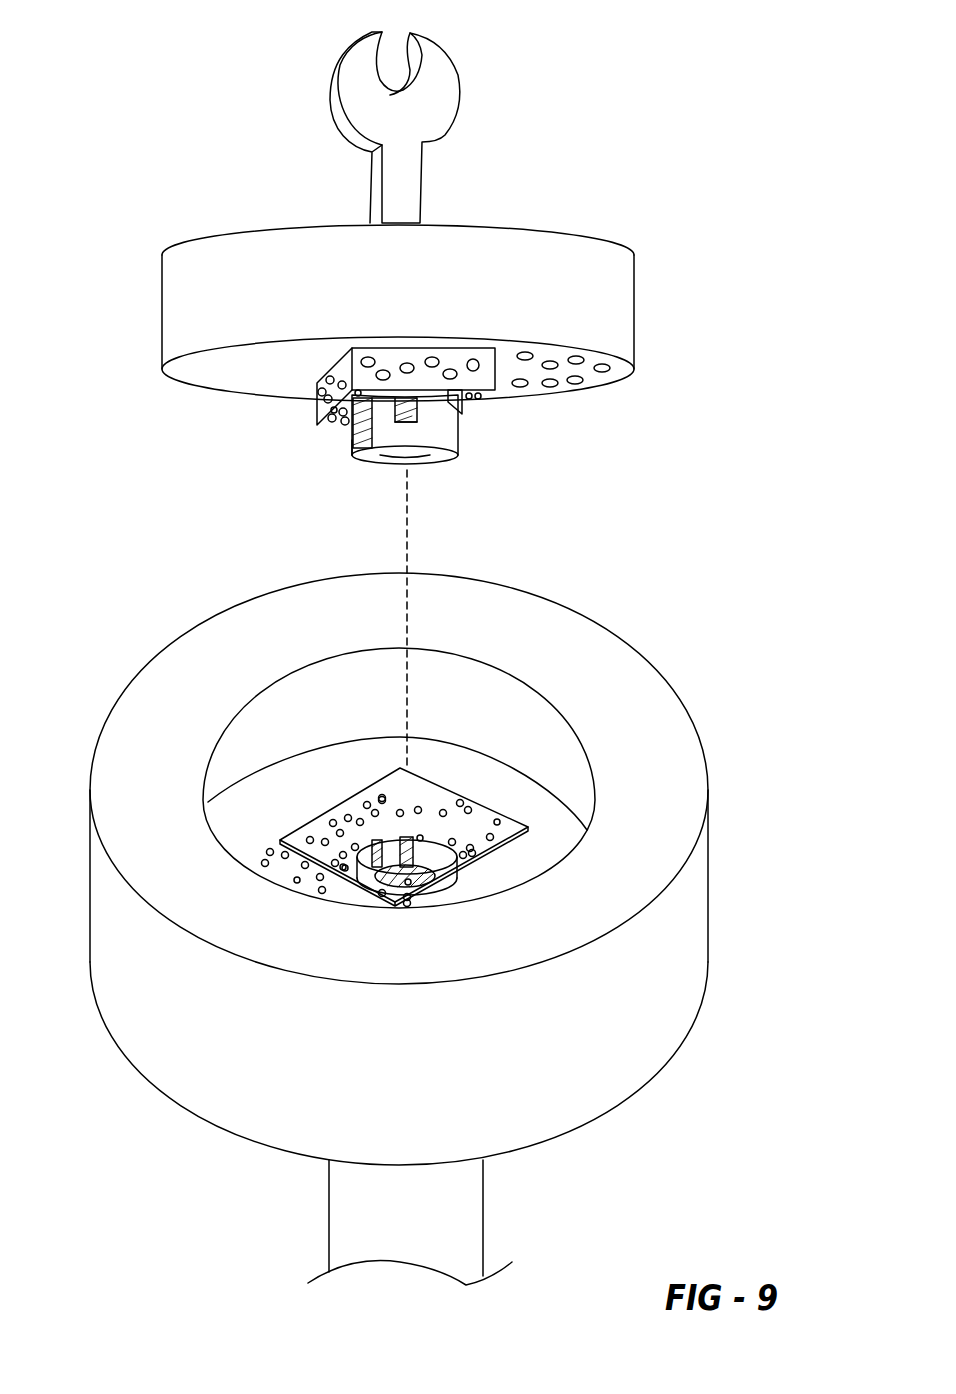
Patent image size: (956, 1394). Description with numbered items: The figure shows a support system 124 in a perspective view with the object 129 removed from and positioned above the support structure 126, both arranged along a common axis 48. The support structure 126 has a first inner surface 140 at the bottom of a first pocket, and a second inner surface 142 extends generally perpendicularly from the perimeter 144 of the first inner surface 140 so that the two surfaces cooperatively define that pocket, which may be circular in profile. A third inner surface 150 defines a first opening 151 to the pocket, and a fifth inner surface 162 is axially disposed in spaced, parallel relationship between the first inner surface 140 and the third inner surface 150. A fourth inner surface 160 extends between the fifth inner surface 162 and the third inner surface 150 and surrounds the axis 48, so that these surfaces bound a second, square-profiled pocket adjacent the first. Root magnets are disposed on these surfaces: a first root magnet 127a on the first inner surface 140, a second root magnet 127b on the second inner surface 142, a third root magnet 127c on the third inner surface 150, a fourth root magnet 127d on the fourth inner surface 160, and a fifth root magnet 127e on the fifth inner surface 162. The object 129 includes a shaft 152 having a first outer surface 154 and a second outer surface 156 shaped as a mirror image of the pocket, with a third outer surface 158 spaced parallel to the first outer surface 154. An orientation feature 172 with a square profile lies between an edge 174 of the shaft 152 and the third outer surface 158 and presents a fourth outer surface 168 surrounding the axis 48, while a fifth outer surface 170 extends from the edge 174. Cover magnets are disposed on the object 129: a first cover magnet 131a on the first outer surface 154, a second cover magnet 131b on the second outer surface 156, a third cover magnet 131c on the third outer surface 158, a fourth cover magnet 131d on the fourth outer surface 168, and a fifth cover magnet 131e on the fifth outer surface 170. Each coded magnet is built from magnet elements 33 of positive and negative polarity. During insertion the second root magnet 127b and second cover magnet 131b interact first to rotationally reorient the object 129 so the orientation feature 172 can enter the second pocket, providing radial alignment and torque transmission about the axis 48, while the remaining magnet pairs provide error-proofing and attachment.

The support system 124 is at (232, 128).
The object 129 is at (210, 245).
The orientation feature 172 is at (323, 373).
The fourth outer surface 168 is at (365, 372).
The fourth cover magnet 131d is at (407, 366).
The edge 174 is at (457, 380).
The third outer surface 158 is at (518, 360).
The fifth cover magnet 131e is at (340, 413).
The second cover magnet 131b is at (362, 442).
The shaft 152 is at (365, 445).
The fifth outer surface 170 is at (350, 457).
The first cover magnet 131a is at (396, 466).
The first outer surface 154 is at (412, 462).
The second outer surface 156 is at (446, 435).
The third cover magnet 131c is at (577, 362).
The magnet elements 33 is at (473, 368).
The axis 48 is at (400, 574).
The support structure 126 is at (150, 715).
The third inner surface 150 is at (272, 775).
The first inner surface 140 is at (428, 882).
The fourth root magnet 127d is at (382, 798).
The first opening 151 is at (432, 842).
The second root magnet 127b is at (420, 834).
The perimeter 144 is at (498, 822).
The fourth inner surface 160 is at (499, 848).
The third root magnet 127c is at (297, 880).
The fifth root magnet 127e is at (343, 870).
The second inner surface 142 is at (366, 872).
The fifth inner surface 162 is at (345, 870).
The first root magnet 127a is at (408, 884).